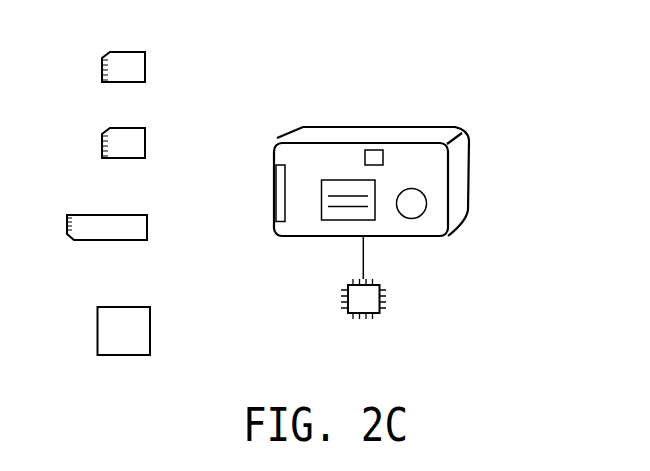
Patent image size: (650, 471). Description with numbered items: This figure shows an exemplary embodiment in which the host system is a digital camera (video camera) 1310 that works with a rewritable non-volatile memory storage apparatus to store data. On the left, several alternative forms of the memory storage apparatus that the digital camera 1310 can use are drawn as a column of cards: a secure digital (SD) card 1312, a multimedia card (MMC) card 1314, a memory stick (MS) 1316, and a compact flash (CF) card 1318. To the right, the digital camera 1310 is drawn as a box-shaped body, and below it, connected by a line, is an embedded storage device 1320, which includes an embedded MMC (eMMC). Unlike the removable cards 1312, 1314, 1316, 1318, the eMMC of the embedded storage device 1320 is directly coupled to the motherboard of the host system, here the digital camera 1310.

The digital camera (video camera) 1310 is at (473, 167).
The secure digital (SD) card 1312 is at (145, 58).
The multimedia card (MMC) card 1314 is at (146, 134).
The memory stick (MS) 1316 is at (148, 225).
The compact flash (CF) card 1318 is at (151, 323).
The embedded storage device 1320 is at (384, 301).